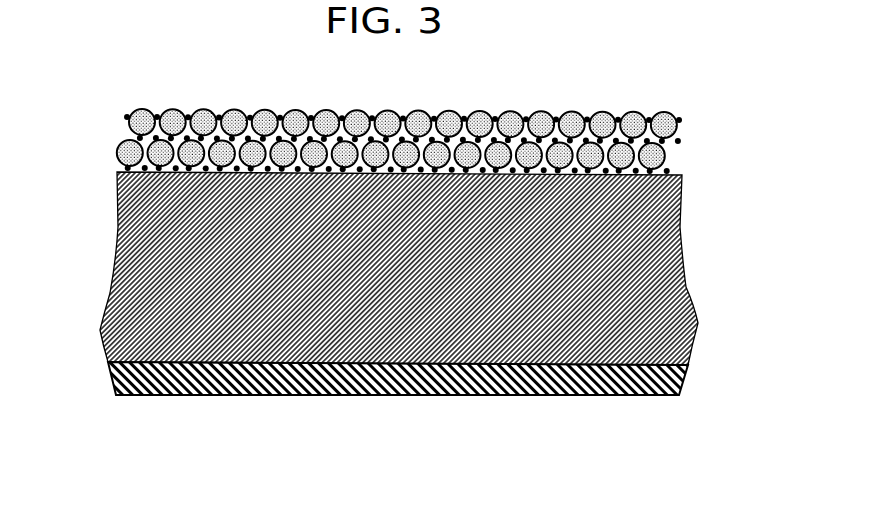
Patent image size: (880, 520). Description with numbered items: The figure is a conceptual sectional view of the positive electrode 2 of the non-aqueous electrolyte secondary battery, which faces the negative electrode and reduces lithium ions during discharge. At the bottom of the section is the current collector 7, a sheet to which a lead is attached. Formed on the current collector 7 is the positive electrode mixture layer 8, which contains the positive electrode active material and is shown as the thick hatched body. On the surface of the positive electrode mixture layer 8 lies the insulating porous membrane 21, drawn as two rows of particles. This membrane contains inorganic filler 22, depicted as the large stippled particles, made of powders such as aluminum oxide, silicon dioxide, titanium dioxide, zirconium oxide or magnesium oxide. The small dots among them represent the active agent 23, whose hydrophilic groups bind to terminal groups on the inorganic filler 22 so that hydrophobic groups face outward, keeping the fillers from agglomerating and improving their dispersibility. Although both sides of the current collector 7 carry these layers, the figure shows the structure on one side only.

The positive electrode 2 is at (359, 314).
The current collector 7 is at (295, 393).
The positive electrode mixture layer 8 is at (458, 393).
The insulating porous membrane 21 is at (438, 154).
The inorganic filler 22 is at (665, 117).
The active agent 23 is at (668, 174).